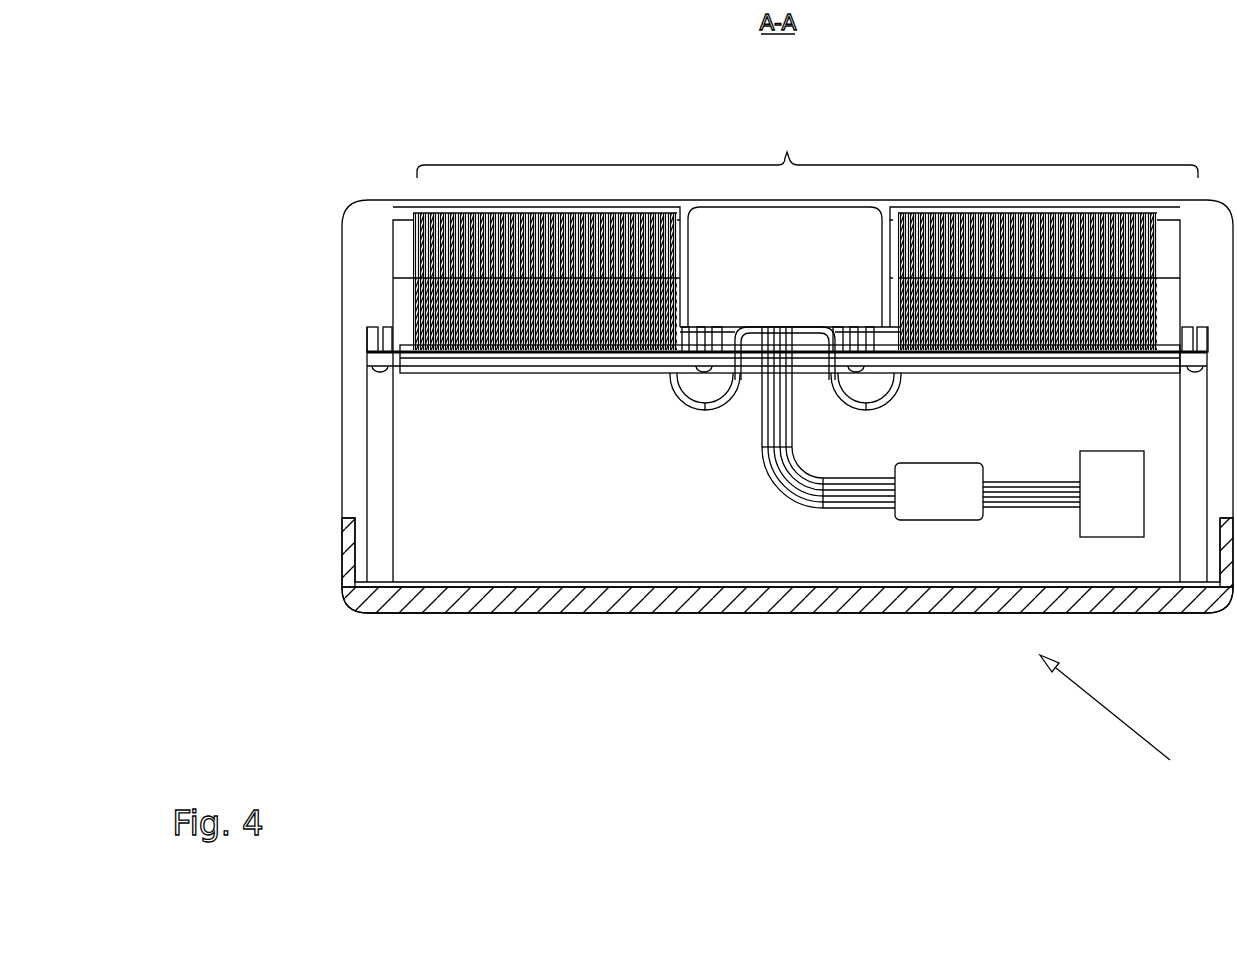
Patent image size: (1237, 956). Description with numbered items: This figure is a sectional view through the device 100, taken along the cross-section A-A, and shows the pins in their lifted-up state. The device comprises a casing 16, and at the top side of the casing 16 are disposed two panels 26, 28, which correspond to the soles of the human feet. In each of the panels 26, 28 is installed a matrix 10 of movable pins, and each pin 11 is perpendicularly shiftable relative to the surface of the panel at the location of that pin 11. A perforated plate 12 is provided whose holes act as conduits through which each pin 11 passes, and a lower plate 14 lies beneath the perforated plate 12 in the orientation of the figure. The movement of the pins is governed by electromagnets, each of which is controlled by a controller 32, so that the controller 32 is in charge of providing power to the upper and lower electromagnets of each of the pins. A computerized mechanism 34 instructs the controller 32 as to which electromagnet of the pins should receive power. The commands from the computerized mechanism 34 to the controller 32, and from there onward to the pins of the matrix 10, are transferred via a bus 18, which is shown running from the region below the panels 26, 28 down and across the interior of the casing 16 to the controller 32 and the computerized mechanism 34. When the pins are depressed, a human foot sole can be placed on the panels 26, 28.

The matrix 10 is at (807, 151).
The pin 11 is at (403, 288).
The perforated plate 12 is at (370, 351).
The lower plate 14 is at (387, 370).
The casing 16 is at (348, 456).
The bus 18 is at (800, 500).
The panel 26 is at (486, 207).
The panel 28 is at (1083, 205).
The controller 32 is at (927, 502).
The computerized mechanism 34 is at (1100, 502).
The device 100 is at (1126, 723).